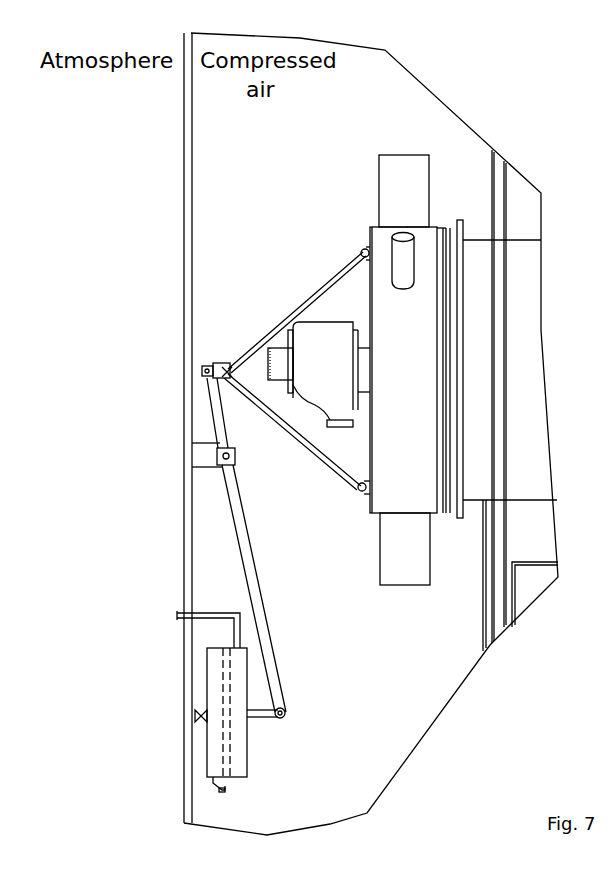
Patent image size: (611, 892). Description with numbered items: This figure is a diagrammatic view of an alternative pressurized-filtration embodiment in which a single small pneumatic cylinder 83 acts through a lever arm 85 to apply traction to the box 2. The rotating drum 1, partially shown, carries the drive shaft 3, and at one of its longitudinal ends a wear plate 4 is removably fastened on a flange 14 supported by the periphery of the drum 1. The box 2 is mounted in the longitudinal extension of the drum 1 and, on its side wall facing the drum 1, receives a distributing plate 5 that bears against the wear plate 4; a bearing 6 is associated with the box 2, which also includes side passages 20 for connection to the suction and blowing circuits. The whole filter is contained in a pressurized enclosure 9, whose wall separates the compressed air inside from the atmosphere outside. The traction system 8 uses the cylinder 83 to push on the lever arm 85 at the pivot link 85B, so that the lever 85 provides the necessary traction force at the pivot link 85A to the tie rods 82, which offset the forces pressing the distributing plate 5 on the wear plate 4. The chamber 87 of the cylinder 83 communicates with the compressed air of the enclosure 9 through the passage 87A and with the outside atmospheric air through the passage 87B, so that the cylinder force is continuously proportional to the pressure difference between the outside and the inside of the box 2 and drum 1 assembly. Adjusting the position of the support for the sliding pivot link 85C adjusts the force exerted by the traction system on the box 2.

The rotating drum 1 is at (525, 463).
The box 2 is at (380, 513).
The drive shaft 3 is at (280, 358).
The wear plate 4 is at (460, 505).
The distributing plate 5 is at (445, 228).
The bearing 6 is at (320, 345).
The traction system 8 is at (300, 657).
The pressurized enclosure 9 is at (185, 200).
The flange 14 is at (463, 240).
The side passages 20 is at (395, 168).
The tie rods 82 is at (313, 287).
The pneumatic cylinder 83 is at (247, 747).
The lever arm 85 is at (257, 587).
The pivot link 85A is at (287, 713).
The pivot link 85B is at (207, 368).
The sliding pivot link 85C is at (220, 463).
The chamber 87 is at (217, 747).
The passage 87A is at (220, 790).
The passage 87B is at (180, 617).